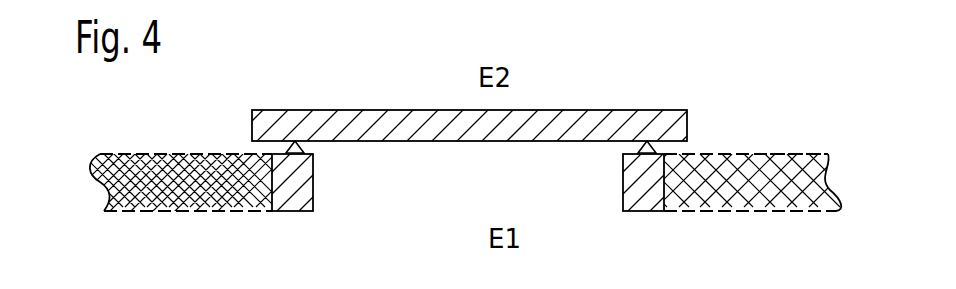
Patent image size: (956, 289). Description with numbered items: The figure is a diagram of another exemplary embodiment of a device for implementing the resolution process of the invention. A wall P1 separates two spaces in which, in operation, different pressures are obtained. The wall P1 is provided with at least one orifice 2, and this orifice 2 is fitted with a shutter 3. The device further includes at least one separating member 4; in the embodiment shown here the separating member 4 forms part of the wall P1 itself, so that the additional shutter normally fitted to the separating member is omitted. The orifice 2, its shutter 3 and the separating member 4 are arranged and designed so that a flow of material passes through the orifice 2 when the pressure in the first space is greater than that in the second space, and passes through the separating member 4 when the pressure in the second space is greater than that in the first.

The orifice 2 is at (385, 180).
The shutter 3 is at (612, 111).
The separating member 4 is at (717, 154).
The wall P1 is at (795, 154).